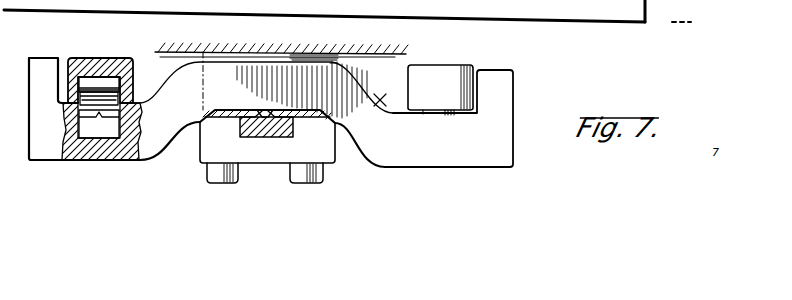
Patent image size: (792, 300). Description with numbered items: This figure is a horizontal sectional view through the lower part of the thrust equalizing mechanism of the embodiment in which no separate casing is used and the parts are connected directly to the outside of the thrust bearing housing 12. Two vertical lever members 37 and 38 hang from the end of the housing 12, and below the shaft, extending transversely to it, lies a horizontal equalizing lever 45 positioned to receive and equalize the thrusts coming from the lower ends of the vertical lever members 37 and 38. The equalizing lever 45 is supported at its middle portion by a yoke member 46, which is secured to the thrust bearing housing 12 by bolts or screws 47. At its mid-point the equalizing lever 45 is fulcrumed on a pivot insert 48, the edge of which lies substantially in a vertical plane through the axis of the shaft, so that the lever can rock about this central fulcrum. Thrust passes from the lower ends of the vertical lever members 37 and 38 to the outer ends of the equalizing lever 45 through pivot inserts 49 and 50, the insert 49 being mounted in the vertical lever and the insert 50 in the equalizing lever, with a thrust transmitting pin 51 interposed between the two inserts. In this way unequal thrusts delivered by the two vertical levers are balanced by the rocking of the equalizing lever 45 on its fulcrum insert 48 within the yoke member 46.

The thrust bearing housing 12 is at (399, 46).
The vertical lever member 37 is at (464, 74).
The vertical lever member 38 is at (90, 60).
The horizontal equalizing lever 45 is at (408, 82).
The yoke member 46 is at (332, 152).
The bolts or screws 47 is at (290, 178).
The pivot insert 48 is at (265, 110).
The pivot insert 49 is at (115, 82).
The pivot insert 50 is at (88, 129).
The thrust transmitting pin 51 is at (87, 100).